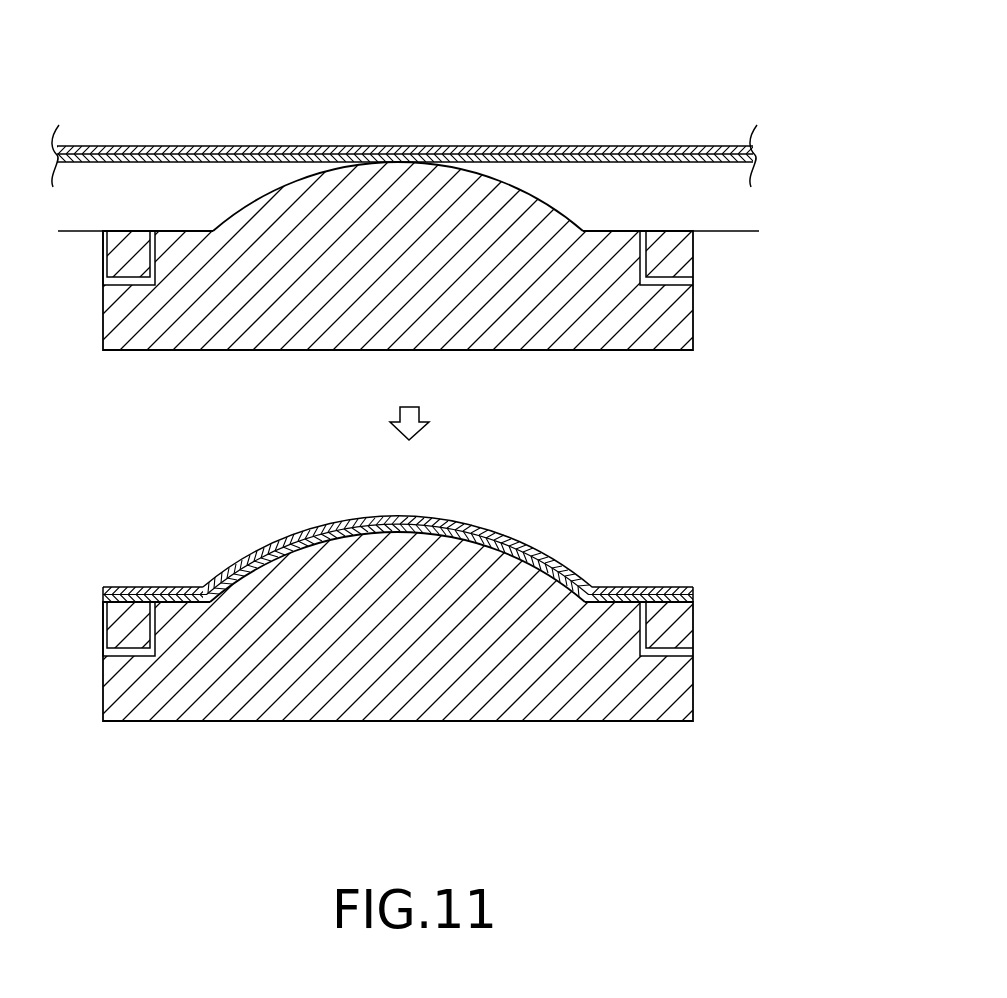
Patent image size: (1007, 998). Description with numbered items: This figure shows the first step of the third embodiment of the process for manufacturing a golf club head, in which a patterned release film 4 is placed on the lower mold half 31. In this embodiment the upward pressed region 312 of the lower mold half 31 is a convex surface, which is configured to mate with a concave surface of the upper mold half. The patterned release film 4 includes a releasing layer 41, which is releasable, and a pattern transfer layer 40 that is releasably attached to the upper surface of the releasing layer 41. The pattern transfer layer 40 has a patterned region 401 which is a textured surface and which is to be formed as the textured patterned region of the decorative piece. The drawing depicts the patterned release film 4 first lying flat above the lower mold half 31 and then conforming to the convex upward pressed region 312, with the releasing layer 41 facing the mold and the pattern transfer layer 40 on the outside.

The patterned release film 4 is at (523, 145).
The pattern transfer layer 40 is at (710, 145).
The releasing layer 41 is at (755, 158).
The patterned region 401 is at (292, 538).
The lower mold half 31 is at (632, 355).
The upward pressed region 312 is at (258, 200).